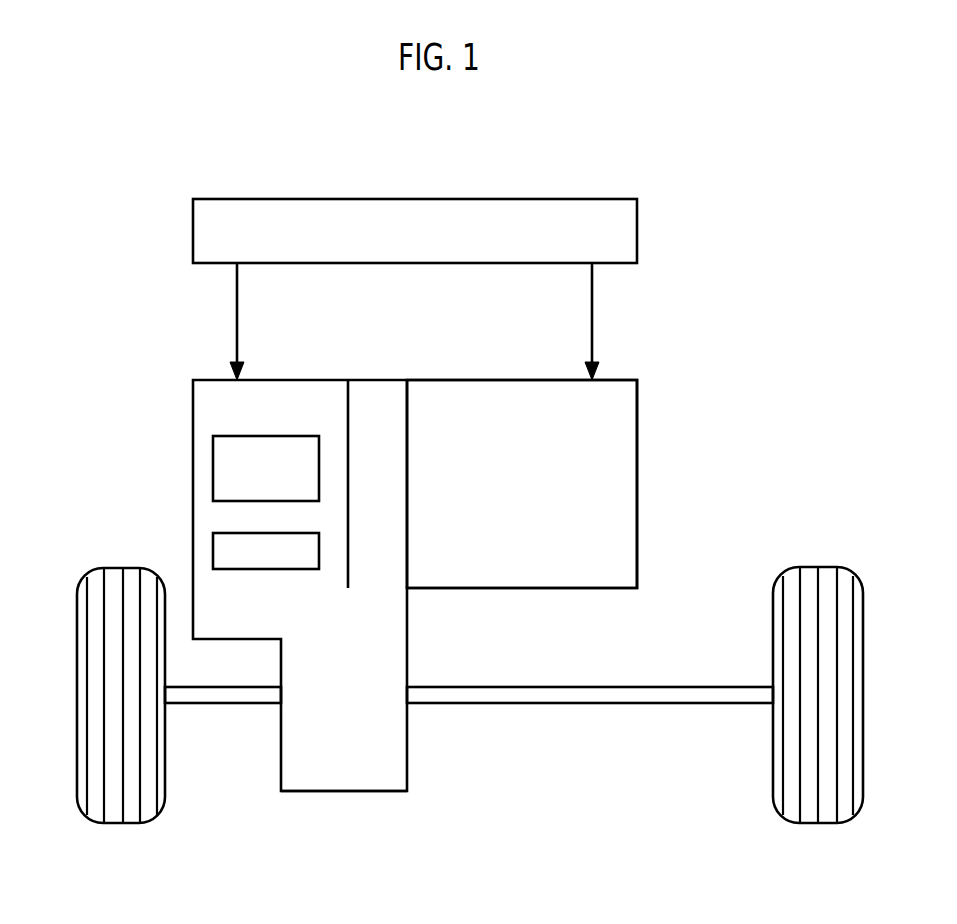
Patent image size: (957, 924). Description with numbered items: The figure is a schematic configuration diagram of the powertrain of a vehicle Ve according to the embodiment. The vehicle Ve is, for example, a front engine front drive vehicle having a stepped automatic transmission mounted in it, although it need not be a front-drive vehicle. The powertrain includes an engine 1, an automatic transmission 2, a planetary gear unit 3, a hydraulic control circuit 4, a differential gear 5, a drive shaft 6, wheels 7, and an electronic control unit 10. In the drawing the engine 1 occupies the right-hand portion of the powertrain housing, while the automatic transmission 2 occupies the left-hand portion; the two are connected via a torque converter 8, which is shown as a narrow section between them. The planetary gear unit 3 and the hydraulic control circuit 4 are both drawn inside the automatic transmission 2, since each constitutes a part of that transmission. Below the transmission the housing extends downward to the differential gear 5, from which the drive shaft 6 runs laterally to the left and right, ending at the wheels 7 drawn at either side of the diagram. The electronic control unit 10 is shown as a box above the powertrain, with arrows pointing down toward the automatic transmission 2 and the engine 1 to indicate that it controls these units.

The vehicle Ve is at (716, 152).
The electronic control unit (ECU) 10 is at (412, 199).
The engine 1 is at (517, 589).
The automatic transmission 2 is at (286, 380).
The planetary gear unit 3 is at (213, 467).
The hydraulic control circuit 4 is at (213, 549).
The differential gear 5 is at (342, 792).
The drive shaft 6 is at (221, 704).
The wheels 7 is at (120, 824).
The torque converter 8 is at (374, 380).